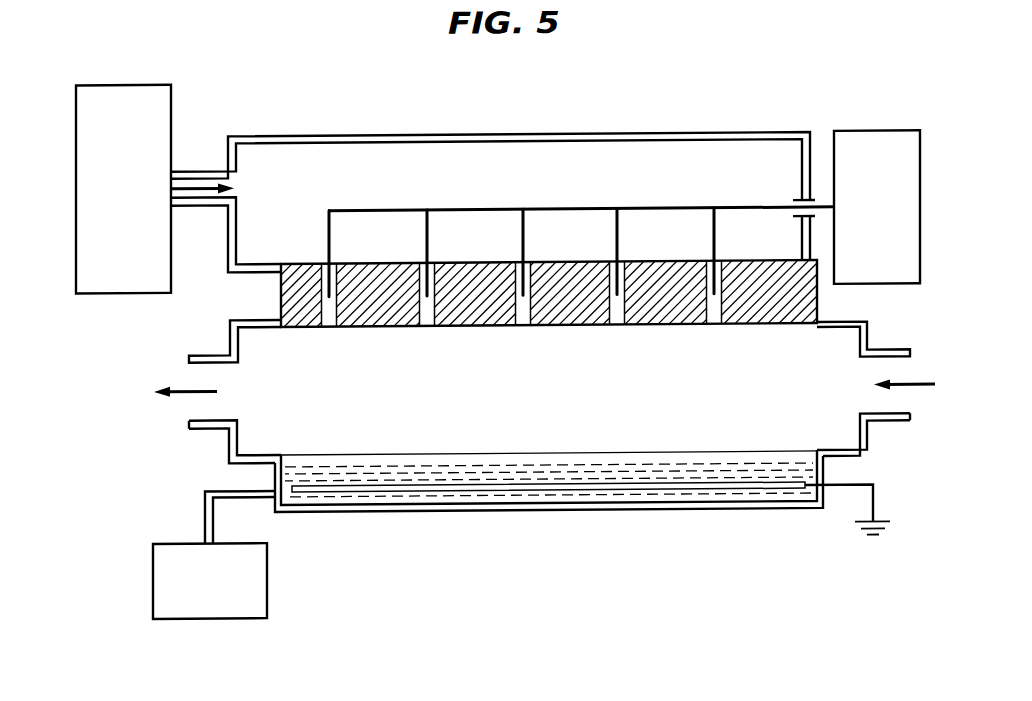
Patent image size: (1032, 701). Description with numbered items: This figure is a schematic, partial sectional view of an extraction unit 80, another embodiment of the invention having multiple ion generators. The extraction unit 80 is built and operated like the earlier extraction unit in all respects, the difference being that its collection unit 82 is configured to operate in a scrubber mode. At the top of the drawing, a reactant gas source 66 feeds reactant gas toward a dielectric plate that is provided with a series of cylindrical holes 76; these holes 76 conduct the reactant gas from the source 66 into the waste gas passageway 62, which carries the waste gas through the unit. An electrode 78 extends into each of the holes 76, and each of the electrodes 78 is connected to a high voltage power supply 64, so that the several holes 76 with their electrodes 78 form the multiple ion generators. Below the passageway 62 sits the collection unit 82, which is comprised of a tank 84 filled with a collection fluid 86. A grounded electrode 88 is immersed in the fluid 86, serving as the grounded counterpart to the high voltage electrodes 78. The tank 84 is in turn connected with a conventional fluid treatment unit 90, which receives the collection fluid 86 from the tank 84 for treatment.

The extraction unit 80 is at (726, 86).
The reactant gas source 66 is at (171, 103).
The high voltage power supply 64 is at (877, 135).
The electrode 78 is at (329, 246).
The cylindrical holes 76 is at (331, 328).
The waste gas passageway 62 is at (890, 372).
The collection unit 82 is at (624, 514).
The tank 84 is at (825, 473).
The collection fluid 86 is at (632, 467).
The grounded electrode 88 is at (448, 494).
The fluid treatment unit 90 is at (267, 572).